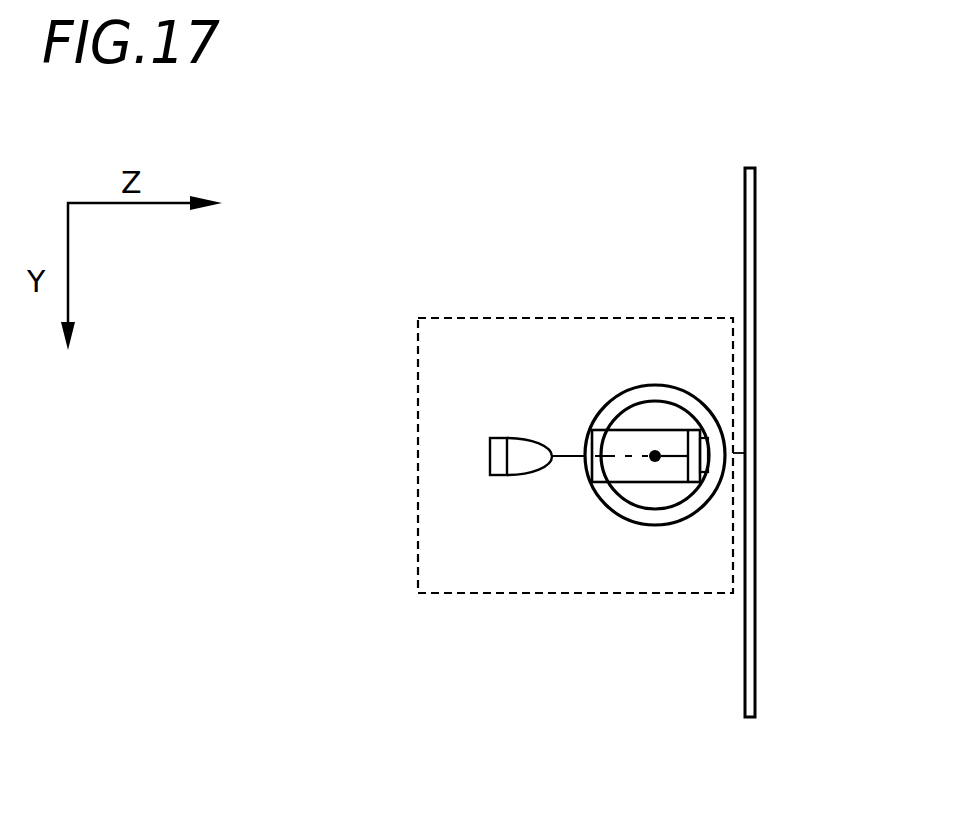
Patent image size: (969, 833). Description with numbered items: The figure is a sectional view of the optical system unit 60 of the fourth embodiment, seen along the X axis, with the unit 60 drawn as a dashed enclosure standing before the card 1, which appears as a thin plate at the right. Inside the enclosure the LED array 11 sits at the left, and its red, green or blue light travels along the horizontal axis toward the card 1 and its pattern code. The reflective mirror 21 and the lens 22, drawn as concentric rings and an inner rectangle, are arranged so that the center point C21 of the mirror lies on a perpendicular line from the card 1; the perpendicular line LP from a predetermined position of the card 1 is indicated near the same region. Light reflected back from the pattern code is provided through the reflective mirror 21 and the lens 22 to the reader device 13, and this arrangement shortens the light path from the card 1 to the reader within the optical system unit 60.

The card 1 is at (756, 329).
The LED array 11 is at (490, 453).
The reader device 13 is at (610, 405).
The reflective mirror 21 is at (643, 482).
The lens 22 is at (656, 402).
The optical system unit 60 is at (418, 535).
The center point of the reflective mirror C21 is at (655, 456).
The perpendicular line LP is at (719, 460).